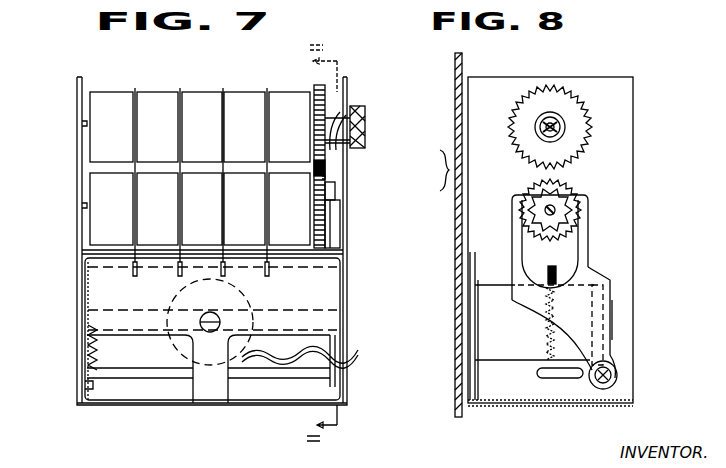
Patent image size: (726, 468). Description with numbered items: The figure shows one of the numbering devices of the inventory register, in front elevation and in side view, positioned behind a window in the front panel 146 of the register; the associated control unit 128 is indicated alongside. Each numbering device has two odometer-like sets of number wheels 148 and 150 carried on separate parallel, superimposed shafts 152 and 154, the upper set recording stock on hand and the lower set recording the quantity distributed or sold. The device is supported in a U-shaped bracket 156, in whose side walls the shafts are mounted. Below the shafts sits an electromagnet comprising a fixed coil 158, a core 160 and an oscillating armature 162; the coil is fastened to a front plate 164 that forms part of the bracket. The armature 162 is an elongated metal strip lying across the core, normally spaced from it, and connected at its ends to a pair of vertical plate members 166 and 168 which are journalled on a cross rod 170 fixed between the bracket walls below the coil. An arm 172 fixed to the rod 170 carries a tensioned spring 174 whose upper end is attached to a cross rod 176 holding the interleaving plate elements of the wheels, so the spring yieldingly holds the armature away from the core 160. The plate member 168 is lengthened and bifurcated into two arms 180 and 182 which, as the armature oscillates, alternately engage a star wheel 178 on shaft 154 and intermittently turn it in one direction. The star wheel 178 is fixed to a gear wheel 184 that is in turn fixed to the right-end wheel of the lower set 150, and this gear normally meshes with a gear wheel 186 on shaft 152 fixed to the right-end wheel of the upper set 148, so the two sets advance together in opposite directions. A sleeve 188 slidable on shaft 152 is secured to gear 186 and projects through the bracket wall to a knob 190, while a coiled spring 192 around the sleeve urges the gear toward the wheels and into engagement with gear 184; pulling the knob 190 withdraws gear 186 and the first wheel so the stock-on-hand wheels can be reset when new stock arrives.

In FIG. 8, the control unit 128 is at (429, 170).
In FIG. 8, the front panel 146 is at (455, 78).
In FIG. 7, the set of number wheels 148 is at (145, 92).
In FIG. 7, the set of number wheels 150 is at (97, 225).
In FIG. 7, the shaft 152 is at (82, 124).
In FIG. 8, the shaft 152 is at (560, 120).
In FIG. 7, the shaft 154 is at (82, 205).
In FIG. 8, the shaft 154 is at (562, 200).
In FIG. 7, the U-shaped bracket 156 is at (265, 405).
In FIG. 8, the U-shaped bracket 156 is at (520, 407).
In FIG. 7, the fixed coil 158 is at (183, 345).
In FIG. 8, the fixed coil 158 is at (497, 292).
In FIG. 8, the core 160 is at (603, 353).
In FIG. 7, the oscillating armature 162 is at (310, 310).
In FIG. 8, the oscillating armature 162 is at (618, 322).
In FIG. 7, the front plate 164 is at (100, 289).
In FIG. 8, the front plate 164 is at (478, 385).
In FIG. 7, the plate member 166 is at (85, 320).
In FIG. 7, the plate member 168 is at (330, 348).
In FIG. 8, the plate member 168 is at (605, 292).
In FIG. 7, the cross rod 170 is at (175, 372).
In FIG. 8, the cross rod 170 is at (617, 378).
In FIG. 7, the arm 172 is at (85, 380).
In FIG. 8, the arm 172 is at (580, 378).
In FIG. 7, the tensioned spring 174 is at (96, 350).
In FIG. 8, the tensioned spring 174 is at (548, 340).
In FIG. 7, the cross rod 176 is at (110, 272).
In FIG. 8, the cross rod 176 is at (570, 286).
In FIG. 7, the star wheel 178 is at (335, 192).
In FIG. 8, the star wheel 178 is at (585, 204).
In FIG. 7, the arm 180 is at (335, 230).
In FIG. 8, the arm 180 is at (518, 200).
In FIG. 8, the arm 182 is at (593, 225).
In FIG. 7, the gear wheel 184 is at (322, 176).
In FIG. 8, the gear wheel 184 is at (522, 182).
In FIG. 7, the gear wheel 186 is at (315, 88).
In FIG. 8, the gear wheel 186 is at (592, 128).
In FIG. 7, the sleeve 188 is at (352, 155).
In FIG. 7, the knob 190 is at (365, 121).
In FIG. 7, the coiled spring 192 is at (333, 117).